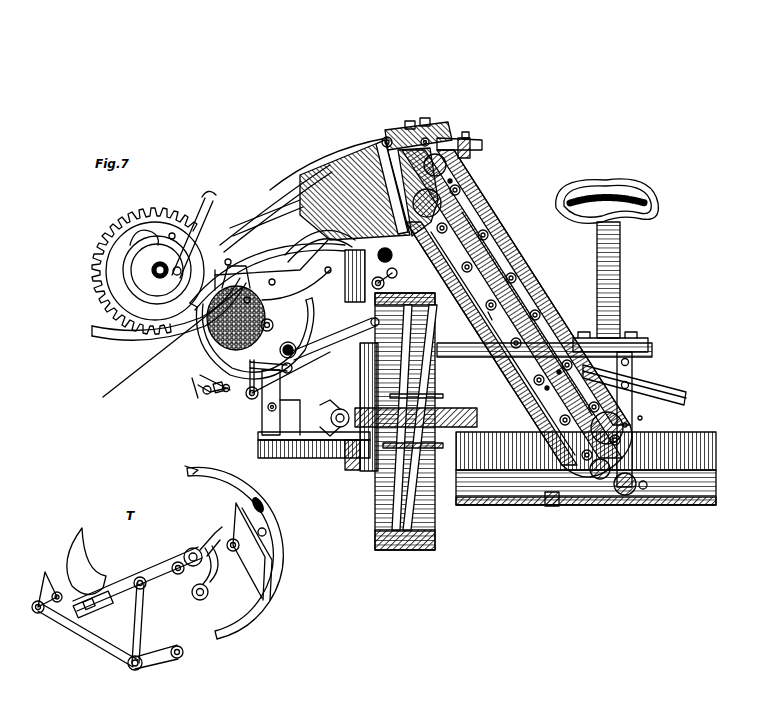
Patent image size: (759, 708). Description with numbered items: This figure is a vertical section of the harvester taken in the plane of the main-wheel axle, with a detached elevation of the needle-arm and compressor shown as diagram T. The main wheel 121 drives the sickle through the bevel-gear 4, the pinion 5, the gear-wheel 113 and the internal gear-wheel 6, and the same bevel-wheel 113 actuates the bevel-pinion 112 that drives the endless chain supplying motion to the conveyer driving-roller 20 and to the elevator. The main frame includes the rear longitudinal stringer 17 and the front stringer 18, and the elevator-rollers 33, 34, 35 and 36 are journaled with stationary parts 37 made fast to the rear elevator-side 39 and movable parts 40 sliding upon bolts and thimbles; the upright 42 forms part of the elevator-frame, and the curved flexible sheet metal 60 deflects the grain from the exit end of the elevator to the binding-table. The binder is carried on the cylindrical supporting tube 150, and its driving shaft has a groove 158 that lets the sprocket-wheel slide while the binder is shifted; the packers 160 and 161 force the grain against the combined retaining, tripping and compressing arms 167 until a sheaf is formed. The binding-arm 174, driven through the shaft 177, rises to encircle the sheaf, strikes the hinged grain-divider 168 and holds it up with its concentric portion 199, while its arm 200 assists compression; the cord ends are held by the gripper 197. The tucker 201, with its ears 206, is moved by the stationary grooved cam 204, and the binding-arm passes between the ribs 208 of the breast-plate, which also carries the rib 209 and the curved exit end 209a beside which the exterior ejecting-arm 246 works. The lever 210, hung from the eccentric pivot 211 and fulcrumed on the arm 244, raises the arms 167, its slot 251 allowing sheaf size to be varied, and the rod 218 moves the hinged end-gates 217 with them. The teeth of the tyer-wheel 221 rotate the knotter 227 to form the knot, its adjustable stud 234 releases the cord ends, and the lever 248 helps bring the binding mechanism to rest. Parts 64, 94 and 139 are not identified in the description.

The bevel-gear 4 is at (607, 429).
The pinion 5 is at (600, 468).
The internal gear-wheel 6 is at (335, 457).
The longitudinal stringer 17 is at (108, 252).
The stringer 18 is at (552, 502).
The conveyer driving-roller 20 is at (625, 490).
The elevator-roller 33 is at (425, 138).
The elevator-roller 34 is at (438, 163).
The elevator-roller 35 is at (625, 425).
The elevator-roller 36 is at (640, 418).
The stationary parts 37 is at (509, 304).
The rear elevator-side 39 is at (511, 333).
The movable parts 40 is at (517, 313).
The upright 42 is at (630, 420).
The curved flexible sheet metal 60 is at (328, 163).
The side plate 64 is at (355, 188).
The link 94 is at (489, 312).
The bevel-pinion 112 is at (282, 402).
The gear-wheel 113 is at (336, 407).
The main wheel 121 is at (503, 429).
The hopper 139 is at (254, 308).
The supporting tube 150 is at (250, 393).
The groove 158 is at (334, 335).
The packer 160 is at (325, 266).
The packer 161 is at (365, 290).
The retaining, tripping, and compressing arms 167 is at (86, 561).
The hinged grain-divider 168 is at (328, 268).
The binding-arm 174 is at (257, 439).
The shaft 177 is at (192, 550).
The gripper 197 is at (162, 350).
The concentric portion 199 is at (272, 280).
The arm 200 is at (220, 541).
The tucker 201 is at (247, 298).
The grooved cam 204 is at (288, 365).
The ears 206 is at (228, 260).
The ribs 208 is at (266, 218).
The rib 209 is at (276, 208).
The curved exit end 209a is at (169, 314).
The lever 210 is at (159, 585).
The eccentric pivot 211 is at (174, 564).
The grain-retaining end-gates 217 is at (195, 383).
The rod 218 is at (134, 521).
The tyer-wheel 221 is at (157, 270).
The knotter 227 is at (215, 272).
The adjustable stud 234 is at (172, 234).
The arm 244 is at (147, 626).
The exterior ejecting-arm 246 is at (196, 220).
The lever 248 is at (159, 655).
The slot 251 is at (100, 604).